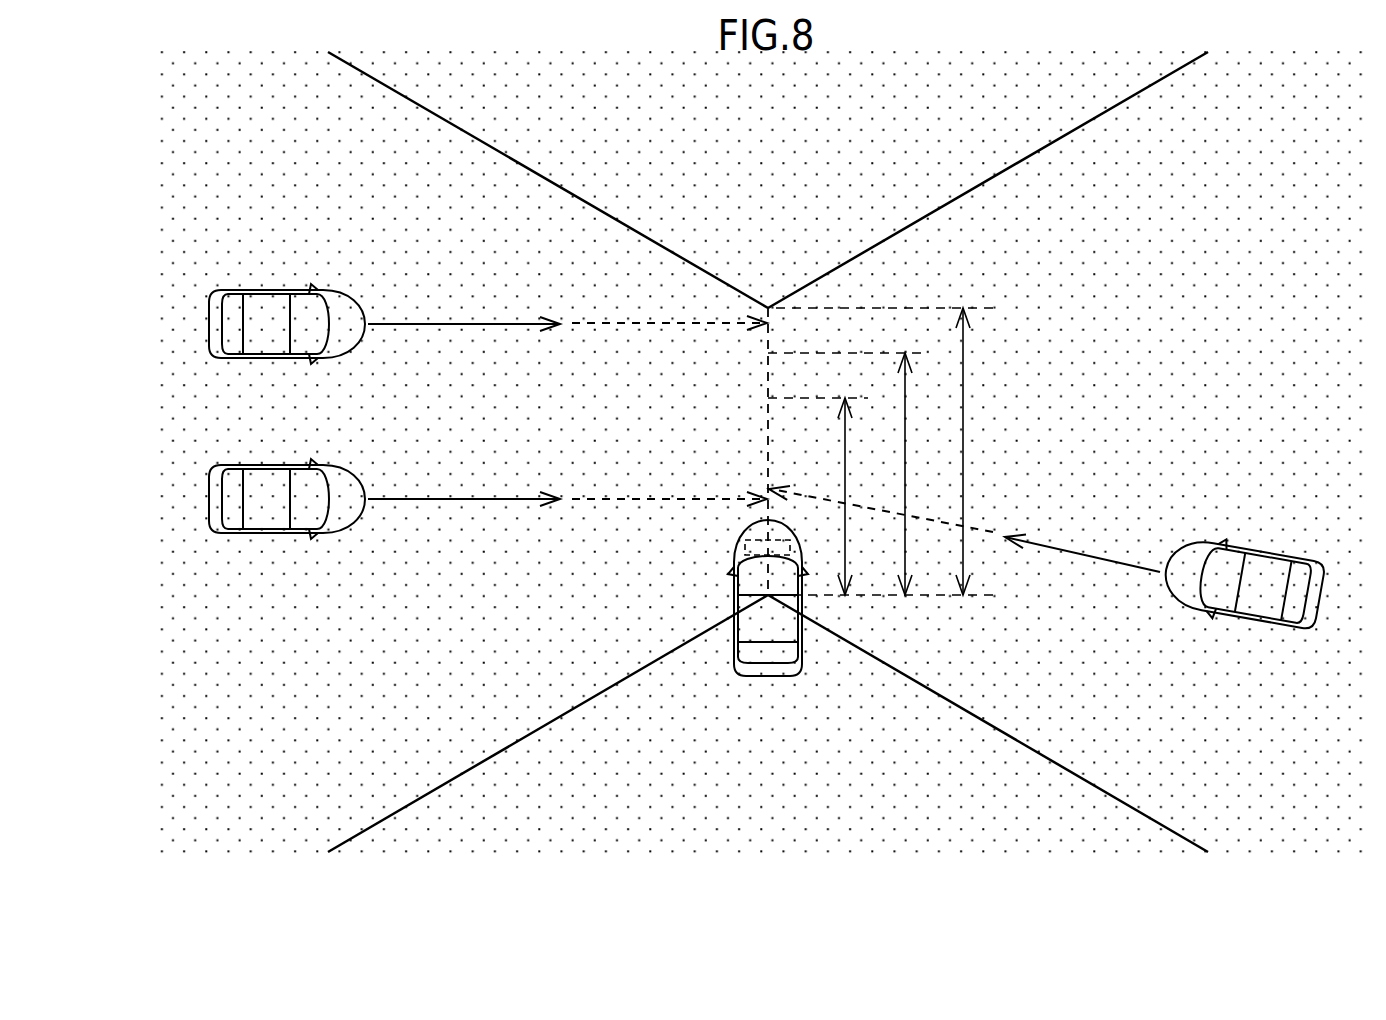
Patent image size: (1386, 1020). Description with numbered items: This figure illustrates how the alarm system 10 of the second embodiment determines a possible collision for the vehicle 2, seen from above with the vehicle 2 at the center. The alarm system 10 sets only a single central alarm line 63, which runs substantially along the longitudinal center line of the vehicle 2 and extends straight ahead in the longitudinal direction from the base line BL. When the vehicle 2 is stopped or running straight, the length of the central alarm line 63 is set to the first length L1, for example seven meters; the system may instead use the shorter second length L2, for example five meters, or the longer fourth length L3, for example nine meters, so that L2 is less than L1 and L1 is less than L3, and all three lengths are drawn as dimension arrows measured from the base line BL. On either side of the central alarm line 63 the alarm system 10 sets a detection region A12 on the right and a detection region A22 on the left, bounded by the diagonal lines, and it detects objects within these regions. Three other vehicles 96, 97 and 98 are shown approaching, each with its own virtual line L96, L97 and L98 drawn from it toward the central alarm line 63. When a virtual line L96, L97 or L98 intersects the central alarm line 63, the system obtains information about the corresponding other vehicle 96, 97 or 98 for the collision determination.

The vehicle 2 is at (768, 678).
The alarm system 10 is at (742, 545).
The central alarm line 63 is at (760, 446).
The other vehicle 96 is at (1258, 553).
The other vehicle 97 is at (262, 467).
The other vehicle 98 is at (262, 292).
The virtual line L96 is at (995, 530).
The virtual line L97 is at (605, 495).
The virtual line L98 is at (605, 320).
The first length L1 is at (852, 474).
The second length L2 is at (822, 496).
The fourth length L3 is at (888, 451).
The base line BL is at (928, 600).
The detection region A12 is at (1048, 760).
The detection region A22 is at (482, 762).